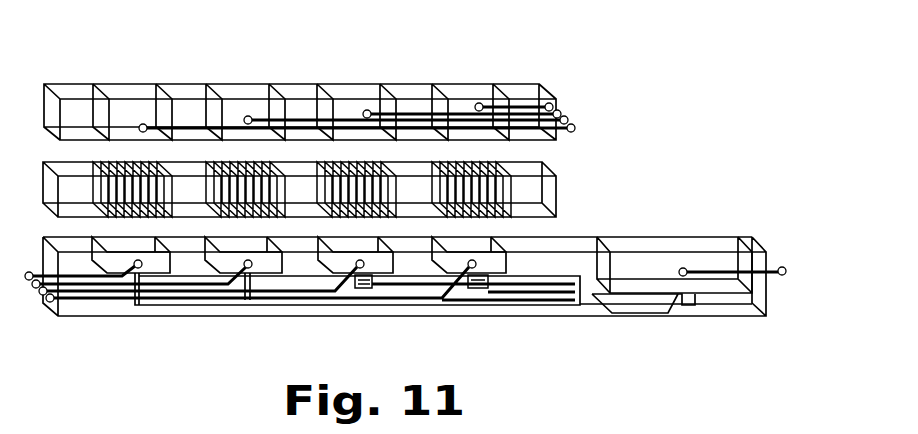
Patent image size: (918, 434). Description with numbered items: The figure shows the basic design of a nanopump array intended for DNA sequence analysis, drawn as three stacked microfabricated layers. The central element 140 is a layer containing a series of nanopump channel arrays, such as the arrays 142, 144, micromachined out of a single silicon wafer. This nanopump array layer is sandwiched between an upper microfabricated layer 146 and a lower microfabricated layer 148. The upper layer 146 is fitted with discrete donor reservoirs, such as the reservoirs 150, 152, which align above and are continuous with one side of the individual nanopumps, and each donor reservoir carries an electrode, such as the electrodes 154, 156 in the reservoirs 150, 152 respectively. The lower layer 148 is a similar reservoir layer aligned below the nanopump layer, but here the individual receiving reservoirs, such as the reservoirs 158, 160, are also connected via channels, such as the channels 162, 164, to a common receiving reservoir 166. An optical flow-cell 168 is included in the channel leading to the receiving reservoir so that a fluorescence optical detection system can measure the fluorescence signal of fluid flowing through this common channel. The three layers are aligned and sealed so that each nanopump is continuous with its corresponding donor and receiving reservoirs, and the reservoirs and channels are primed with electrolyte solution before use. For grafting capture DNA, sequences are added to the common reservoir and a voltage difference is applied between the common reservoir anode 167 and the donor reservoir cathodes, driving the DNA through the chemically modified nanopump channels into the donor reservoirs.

The central element 140 is at (564, 199).
The nanopump channel array 142 is at (487, 157).
The nanopump channel array 144 is at (380, 157).
The upper microfabricated layer 146 is at (577, 111).
The lower microfabricated layer 148 is at (780, 290).
The donor reservoir 150 is at (478, 84).
The donor reservoir 152 is at (366, 86).
The electrode 154 is at (477, 104).
The electrode 156 is at (365, 110).
The receiving reservoir 158 is at (485, 236).
The receiving reservoir 160 is at (368, 238).
The channel 162 is at (487, 289).
The channel 164 is at (374, 289).
The common receiving reservoir 166 is at (695, 240).
The common reservoir anode 167 is at (788, 262).
The optical flow-cell 168 is at (676, 306).